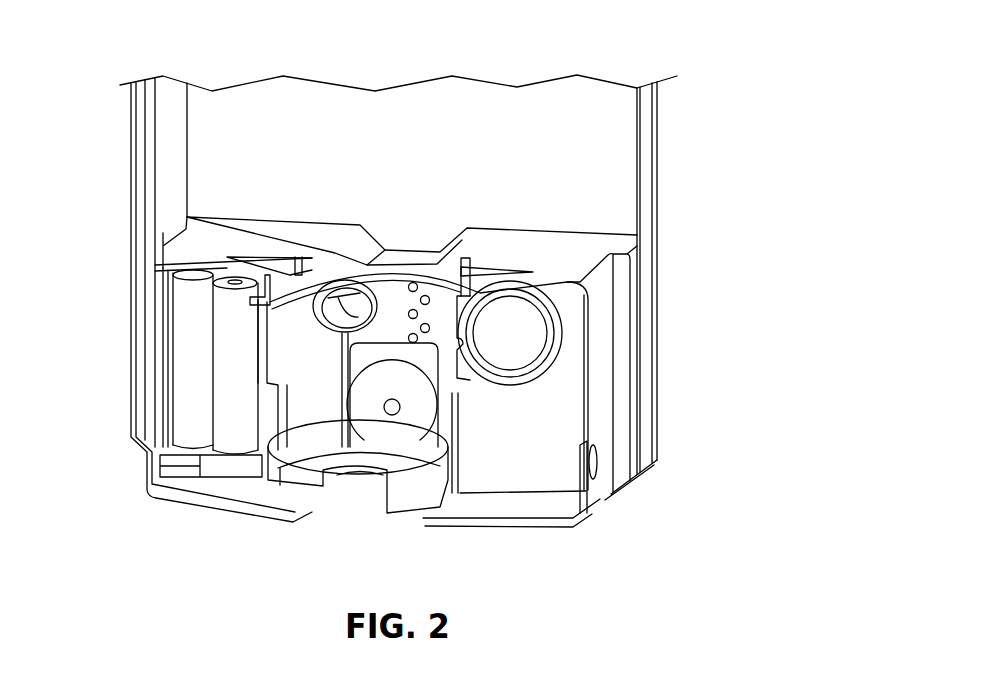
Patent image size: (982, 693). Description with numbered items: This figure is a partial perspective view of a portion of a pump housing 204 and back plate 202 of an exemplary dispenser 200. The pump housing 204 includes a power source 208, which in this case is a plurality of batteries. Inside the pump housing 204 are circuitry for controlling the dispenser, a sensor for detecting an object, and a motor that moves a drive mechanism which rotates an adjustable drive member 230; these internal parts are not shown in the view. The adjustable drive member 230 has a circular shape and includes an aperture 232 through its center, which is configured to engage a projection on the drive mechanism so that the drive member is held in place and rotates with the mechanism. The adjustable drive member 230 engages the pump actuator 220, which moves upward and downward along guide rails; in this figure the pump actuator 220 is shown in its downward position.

The dispenser 200 is at (436, 324).
The back plate 202 is at (657, 243).
The pump housing 204 is at (600, 363).
The power source 208 is at (195, 372).
The pump actuator 220 is at (293, 498).
The adjustable drive member 230 is at (422, 407).
The aperture 232 is at (392, 412).